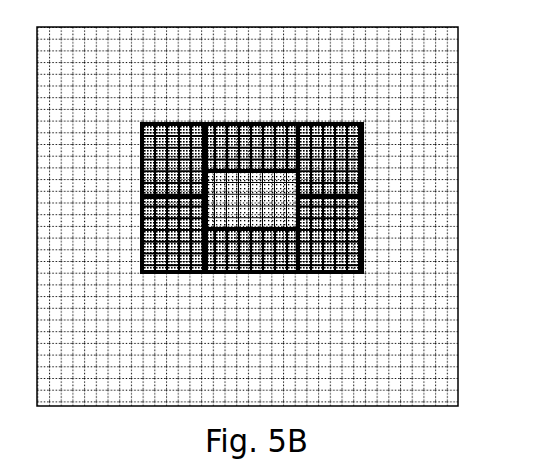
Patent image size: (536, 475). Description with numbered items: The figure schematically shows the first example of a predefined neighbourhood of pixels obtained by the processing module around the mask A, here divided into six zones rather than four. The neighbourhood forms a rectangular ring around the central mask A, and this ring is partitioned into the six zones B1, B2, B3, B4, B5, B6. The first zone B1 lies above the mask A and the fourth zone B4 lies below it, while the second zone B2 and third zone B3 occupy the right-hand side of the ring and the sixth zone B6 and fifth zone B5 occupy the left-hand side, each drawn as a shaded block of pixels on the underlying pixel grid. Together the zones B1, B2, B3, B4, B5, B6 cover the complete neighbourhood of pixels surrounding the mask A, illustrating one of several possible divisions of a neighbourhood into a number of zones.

The mask A is at (252, 200).
The zone of the neighbourhood B1 is at (250, 124).
The zone of the neighbourhood B2 is at (362, 164).
The zone of the neighbourhood B3 is at (362, 251).
The zone of the neighbourhood B4 is at (247, 273).
The zone of the neighbourhood B5 is at (142, 247).
The zone of the neighbourhood B6 is at (142, 156).